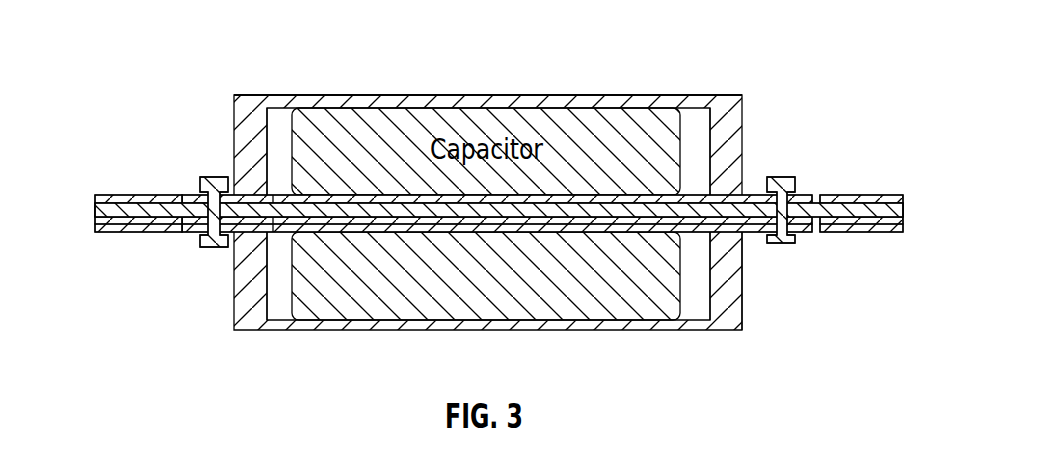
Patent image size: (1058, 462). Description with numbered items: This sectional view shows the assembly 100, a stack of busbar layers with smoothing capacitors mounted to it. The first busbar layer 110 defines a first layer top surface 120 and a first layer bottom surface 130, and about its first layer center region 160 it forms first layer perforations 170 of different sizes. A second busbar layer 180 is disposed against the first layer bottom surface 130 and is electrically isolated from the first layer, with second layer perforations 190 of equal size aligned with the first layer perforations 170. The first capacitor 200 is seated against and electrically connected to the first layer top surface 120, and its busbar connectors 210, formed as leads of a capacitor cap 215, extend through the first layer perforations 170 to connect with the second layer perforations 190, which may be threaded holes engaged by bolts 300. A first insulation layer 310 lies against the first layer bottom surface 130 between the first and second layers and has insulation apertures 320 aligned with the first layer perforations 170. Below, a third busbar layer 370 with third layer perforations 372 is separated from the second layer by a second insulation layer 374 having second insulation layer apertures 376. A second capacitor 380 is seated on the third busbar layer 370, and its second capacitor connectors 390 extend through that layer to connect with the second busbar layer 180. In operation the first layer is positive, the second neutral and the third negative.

The assembly 100 is at (202, 80).
The first busbar layer 110 is at (150, 195).
The first layer top surface 120 is at (857, 195).
The first layer bottom surface 130 is at (103, 195).
The first layer center region 160 is at (573, 197).
The first layer perforations 170 is at (692, 190).
The second busbar layer 180 is at (423, 206).
The second layer perforations 190 is at (800, 195).
The first capacitor 200 is at (580, 117).
The busbar connectors 210 is at (733, 125).
The capacitor cap 215 is at (723, 95).
The bolts 300 is at (215, 177).
The first insulation layer 310 is at (94, 206).
The insulation apertures 320 is at (288, 198).
The third busbar layer 370 is at (885, 232).
The third layer perforations 372 is at (282, 258).
The second insulation layer 374 is at (905, 217).
The second insulation layer apertures 376 is at (183, 224).
The second capacitor 380 is at (648, 313).
The second capacitor connectors 390 is at (742, 280).